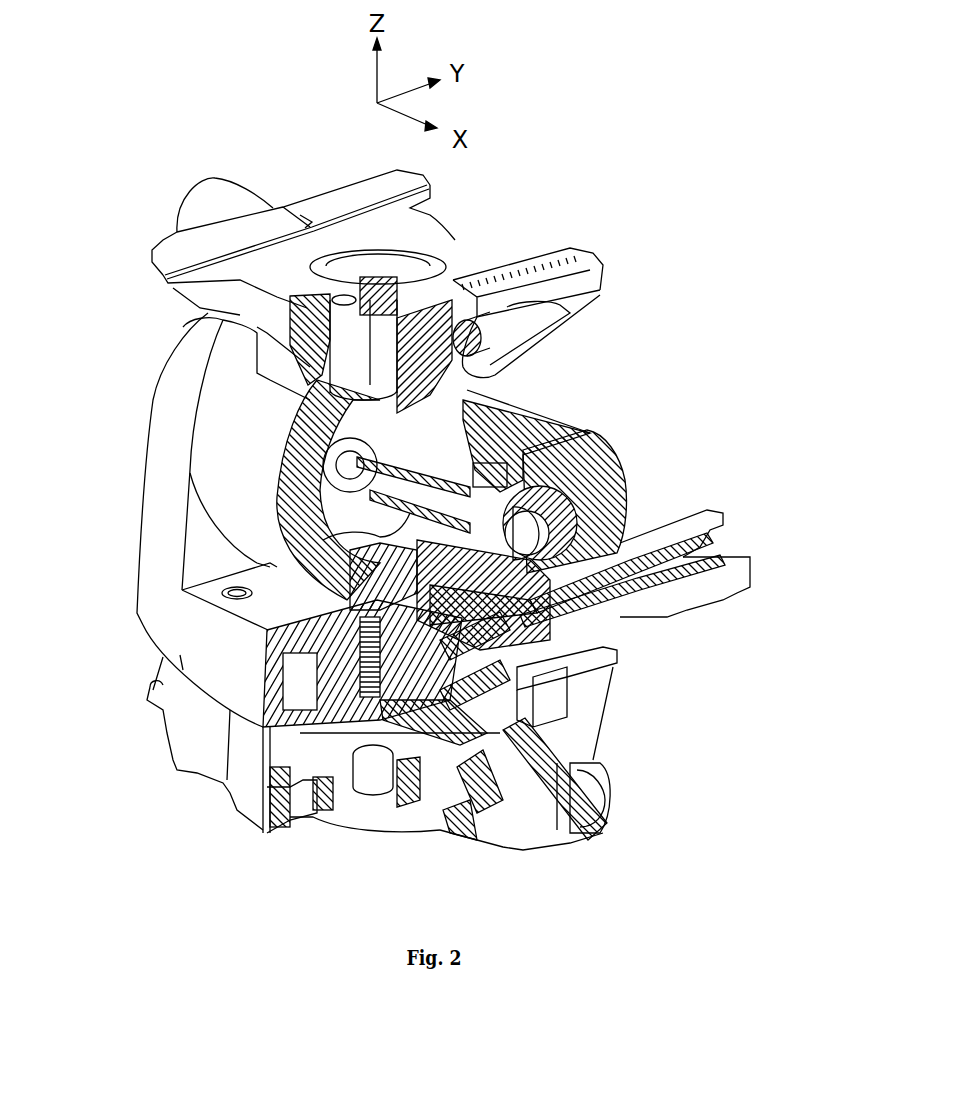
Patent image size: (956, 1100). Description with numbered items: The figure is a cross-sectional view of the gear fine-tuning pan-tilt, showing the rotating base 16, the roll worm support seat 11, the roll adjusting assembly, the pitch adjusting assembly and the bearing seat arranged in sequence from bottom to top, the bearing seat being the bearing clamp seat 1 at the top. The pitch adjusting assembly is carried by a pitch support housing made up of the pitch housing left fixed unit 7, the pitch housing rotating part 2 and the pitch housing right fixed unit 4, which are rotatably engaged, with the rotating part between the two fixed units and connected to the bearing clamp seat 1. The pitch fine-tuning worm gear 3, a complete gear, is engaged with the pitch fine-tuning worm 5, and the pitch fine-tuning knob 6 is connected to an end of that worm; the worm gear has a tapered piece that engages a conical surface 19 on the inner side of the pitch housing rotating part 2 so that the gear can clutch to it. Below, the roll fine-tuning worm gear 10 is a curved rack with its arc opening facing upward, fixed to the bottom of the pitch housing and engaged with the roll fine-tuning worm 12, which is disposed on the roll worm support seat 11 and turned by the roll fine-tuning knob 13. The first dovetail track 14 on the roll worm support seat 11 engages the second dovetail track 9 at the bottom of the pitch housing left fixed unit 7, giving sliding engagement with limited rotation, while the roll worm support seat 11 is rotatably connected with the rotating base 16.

The bearing clamp seat 1 is at (404, 237).
The pitch housing rotating part 2 is at (247, 394).
The pitch fine-tuning worm gear 3 is at (537, 497).
The pitch housing right fixed unit 4 is at (608, 502).
The pitch fine-tuning worm 5 is at (589, 592).
The pitch fine-tuning knob 6 is at (715, 588).
The pitch housing left fixed unit 7 is at (181, 399).
The second dovetail track 9 is at (590, 658).
The roll fine-tuning worm gear 10 is at (403, 665).
The roll worm support seat 11 is at (195, 712).
The roll fine-tuning worm 12 is at (480, 758).
The roll fine-tuning knob 13 is at (557, 762).
The first dovetail track 14 is at (551, 710).
The rotating base 16 is at (285, 820).
The conical surface 19 is at (490, 474).